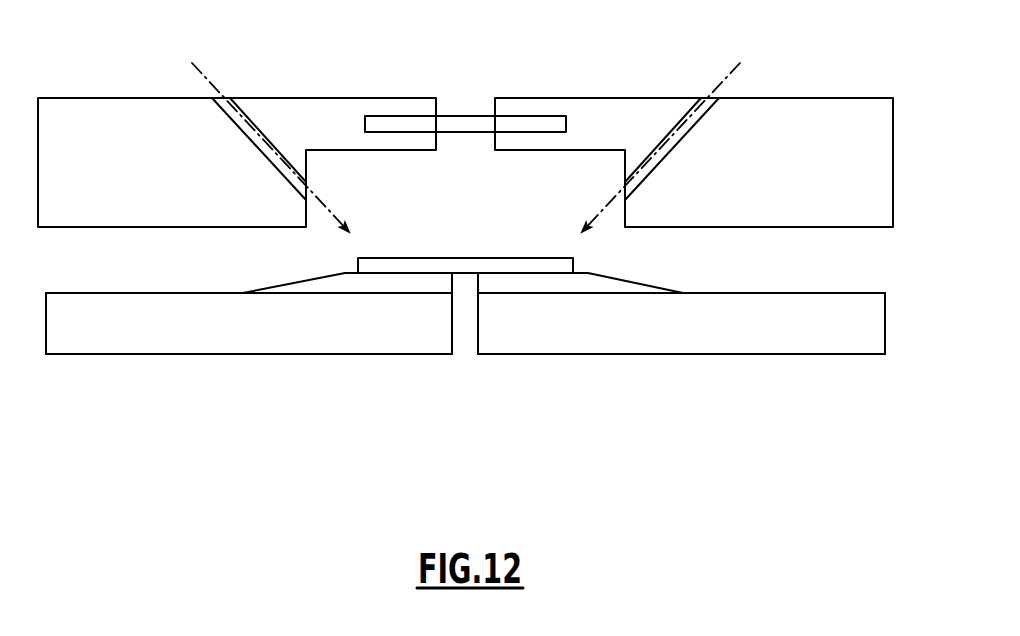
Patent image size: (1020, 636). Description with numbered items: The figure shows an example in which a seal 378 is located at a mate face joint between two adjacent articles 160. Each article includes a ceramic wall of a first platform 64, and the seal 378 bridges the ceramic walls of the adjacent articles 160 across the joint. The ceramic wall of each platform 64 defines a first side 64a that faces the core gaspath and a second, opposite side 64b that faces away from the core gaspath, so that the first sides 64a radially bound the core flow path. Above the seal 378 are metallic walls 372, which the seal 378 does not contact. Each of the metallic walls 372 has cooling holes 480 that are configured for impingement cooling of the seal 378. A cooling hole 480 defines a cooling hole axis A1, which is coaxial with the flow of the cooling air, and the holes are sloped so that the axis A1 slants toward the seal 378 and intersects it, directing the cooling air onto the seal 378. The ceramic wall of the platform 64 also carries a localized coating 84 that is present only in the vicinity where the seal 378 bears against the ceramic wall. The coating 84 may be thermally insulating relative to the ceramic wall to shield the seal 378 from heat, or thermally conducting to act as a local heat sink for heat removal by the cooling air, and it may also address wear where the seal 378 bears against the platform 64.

The metallic wall 372 is at (300, 84).
The cooling hole 480 is at (246, 120).
The cooling hole axis A1 is at (322, 206).
The seal 378 is at (415, 246).
The coating 84 is at (323, 278).
The first platform 64 is at (135, 368).
The first side 64a is at (212, 356).
The second side 64b is at (112, 292).
The article 160 is at (498, 368).